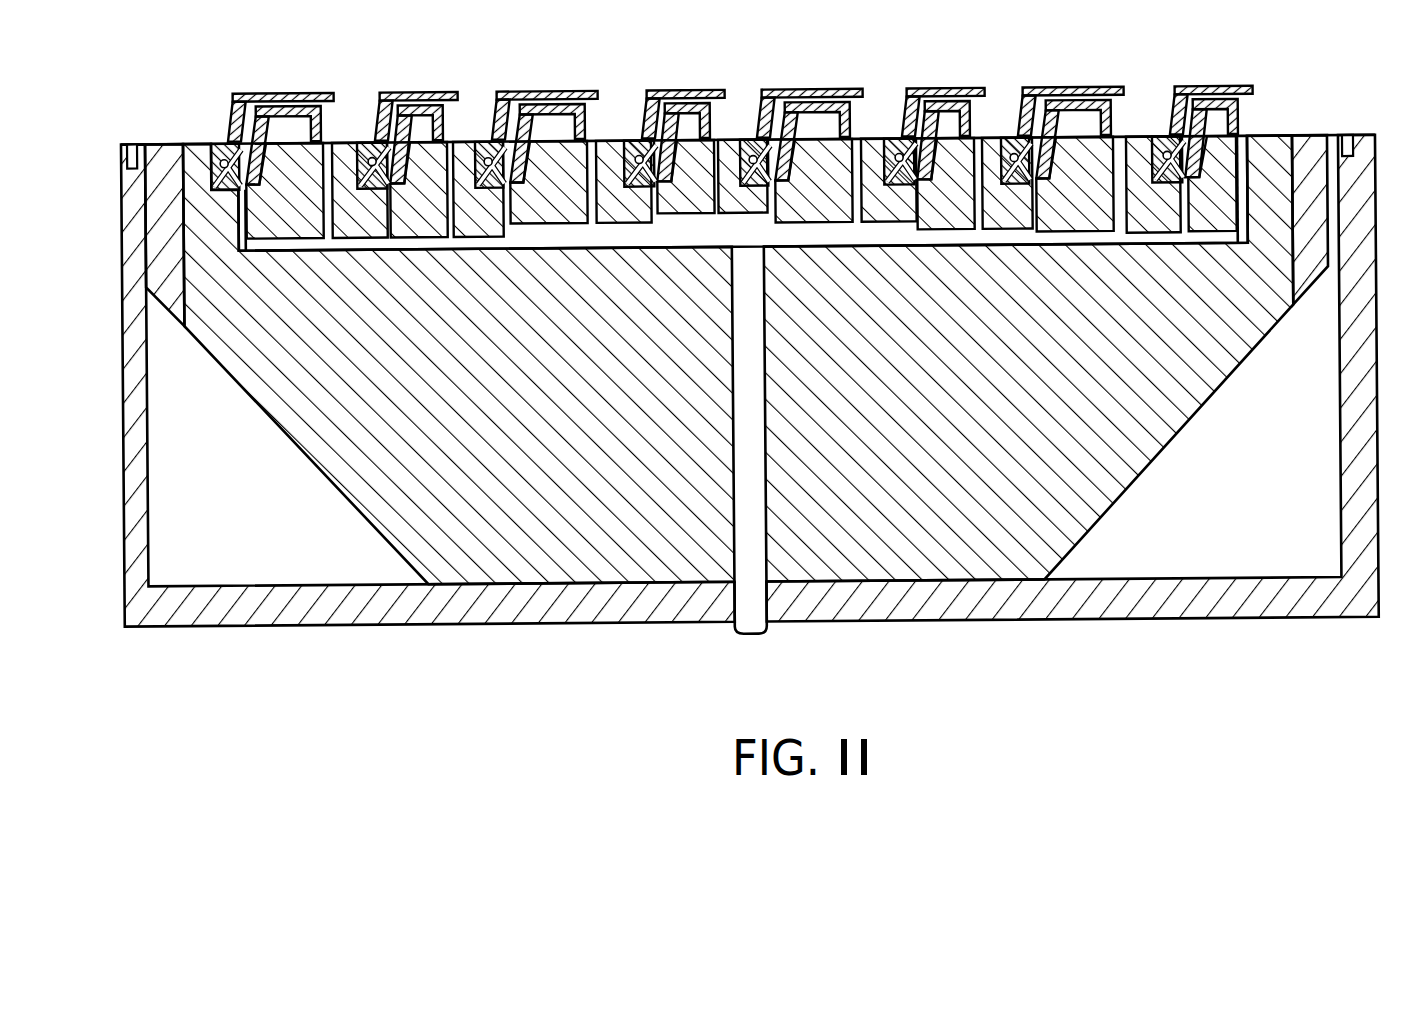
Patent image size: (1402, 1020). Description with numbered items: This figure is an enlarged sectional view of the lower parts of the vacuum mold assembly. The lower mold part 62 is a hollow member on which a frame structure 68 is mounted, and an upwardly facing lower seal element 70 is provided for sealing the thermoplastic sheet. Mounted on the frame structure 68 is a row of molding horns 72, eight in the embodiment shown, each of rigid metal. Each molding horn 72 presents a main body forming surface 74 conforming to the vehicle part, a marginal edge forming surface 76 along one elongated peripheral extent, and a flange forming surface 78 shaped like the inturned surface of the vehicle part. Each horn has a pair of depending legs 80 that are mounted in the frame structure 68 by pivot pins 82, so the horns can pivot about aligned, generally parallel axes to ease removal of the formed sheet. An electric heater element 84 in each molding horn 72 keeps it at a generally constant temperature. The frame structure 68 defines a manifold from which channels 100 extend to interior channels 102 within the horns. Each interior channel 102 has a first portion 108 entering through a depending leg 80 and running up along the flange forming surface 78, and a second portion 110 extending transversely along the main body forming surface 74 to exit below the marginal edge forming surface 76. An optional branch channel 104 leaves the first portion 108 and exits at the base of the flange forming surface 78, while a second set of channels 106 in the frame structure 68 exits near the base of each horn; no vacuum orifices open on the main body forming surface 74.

The lower mold part 62 is at (130, 385).
The frame structure 68 is at (312, 456).
The lower seal element 70 is at (113, 153).
The molding horn 72 is at (227, 110).
The main body forming surface 74 is at (402, 95).
The marginal edge forming surface 76 is at (919, 87).
The flange forming surface 78 is at (1175, 106).
The depending leg 80 is at (731, 140).
The pivot pin 82 is at (490, 142).
The electric heater element 84 is at (284, 118).
The channel 100 is at (238, 222).
The interior channel 102 is at (234, 96).
The branch channel 104 is at (217, 147).
The second set of channels 106 is at (337, 167).
The first portion 108 is at (243, 130).
The second portion 110 is at (274, 105).